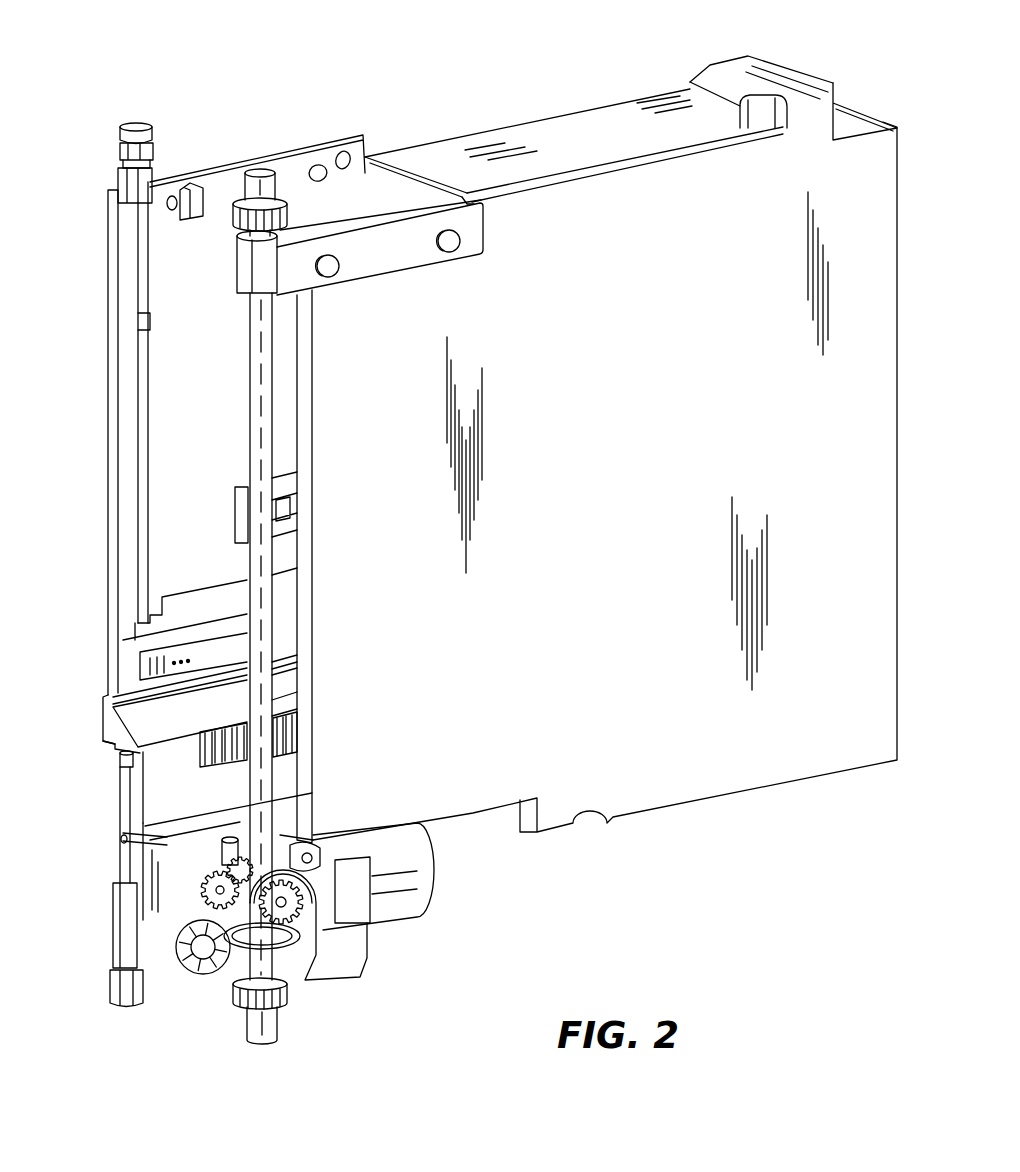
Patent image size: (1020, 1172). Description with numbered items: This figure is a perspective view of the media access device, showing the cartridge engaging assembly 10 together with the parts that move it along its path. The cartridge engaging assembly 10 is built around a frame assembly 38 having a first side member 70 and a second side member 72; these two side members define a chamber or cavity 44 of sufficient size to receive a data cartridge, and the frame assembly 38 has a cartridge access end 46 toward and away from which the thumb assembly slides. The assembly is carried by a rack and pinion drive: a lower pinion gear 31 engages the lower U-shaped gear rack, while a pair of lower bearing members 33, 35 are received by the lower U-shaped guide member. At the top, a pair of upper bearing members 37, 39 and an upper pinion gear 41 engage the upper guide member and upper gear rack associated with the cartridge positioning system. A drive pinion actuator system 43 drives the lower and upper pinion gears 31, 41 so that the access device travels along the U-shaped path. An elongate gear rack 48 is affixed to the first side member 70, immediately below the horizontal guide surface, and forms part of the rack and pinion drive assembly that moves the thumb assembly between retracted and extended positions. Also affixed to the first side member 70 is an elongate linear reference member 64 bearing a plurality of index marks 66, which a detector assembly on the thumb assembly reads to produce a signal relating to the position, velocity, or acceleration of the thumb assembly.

The cartridge engaging assembly 10 is at (235, 46).
The lower pinion gear 31 is at (235, 1000).
The lower bearing member 33 is at (110, 978).
The lower bearing member 35 is at (280, 1023).
The upper bearing member 37 is at (113, 178).
The frame assembly 38 is at (792, 60).
The upper bearing member 39 is at (242, 182).
The upper pinion gear 41 is at (236, 222).
The drive pinion actuator system 43 is at (447, 890).
The chamber or cavity 44 is at (170, 379).
The cartridge access end 46 is at (108, 505).
The elongate gear rack 48 is at (225, 771).
The elongate linear reference member 64 is at (230, 636).
The index marks 66 is at (140, 668).
The first side member 70 is at (492, 128).
The second side member 72 is at (624, 479).